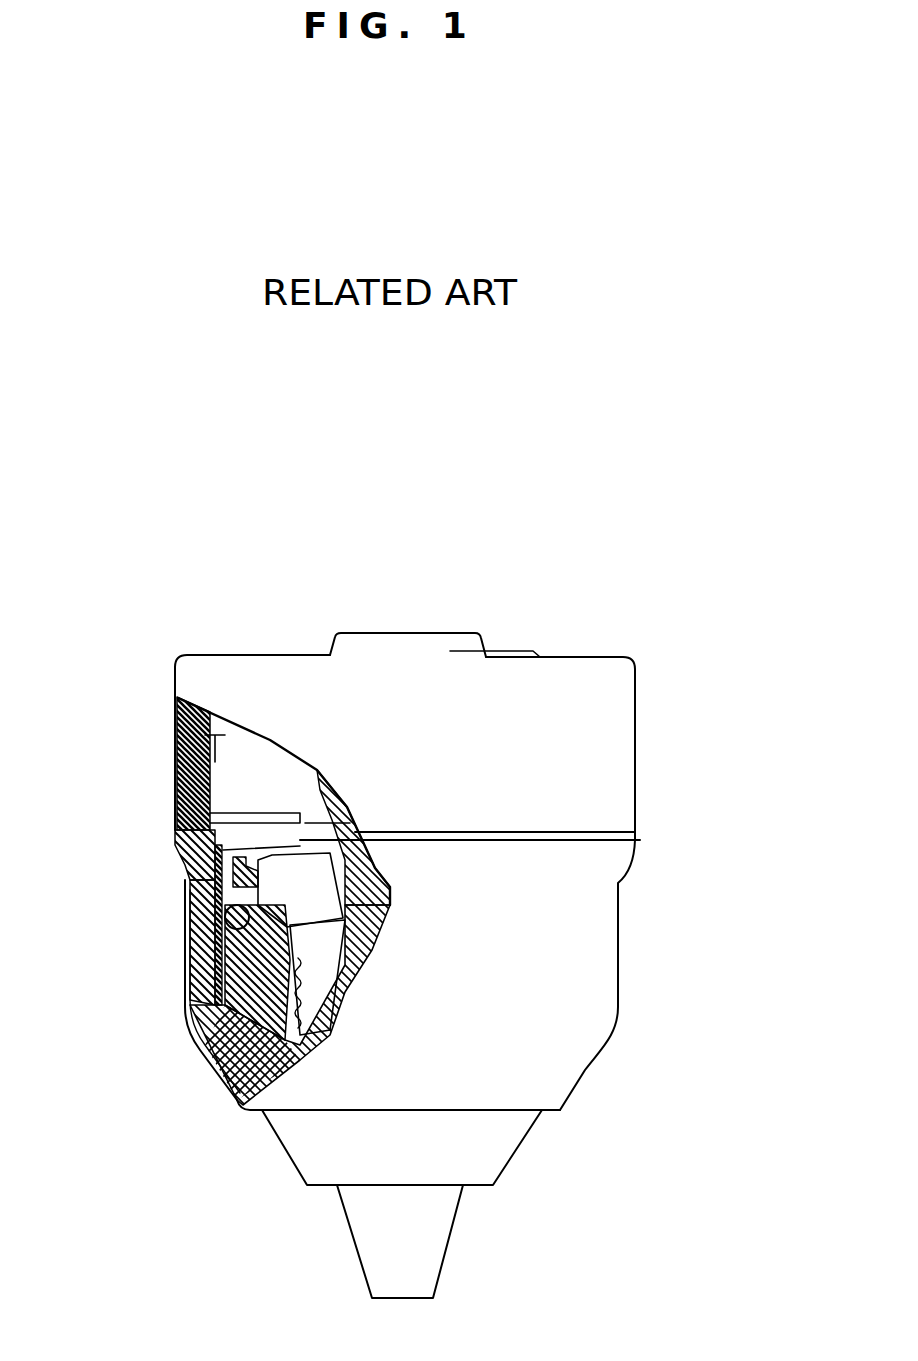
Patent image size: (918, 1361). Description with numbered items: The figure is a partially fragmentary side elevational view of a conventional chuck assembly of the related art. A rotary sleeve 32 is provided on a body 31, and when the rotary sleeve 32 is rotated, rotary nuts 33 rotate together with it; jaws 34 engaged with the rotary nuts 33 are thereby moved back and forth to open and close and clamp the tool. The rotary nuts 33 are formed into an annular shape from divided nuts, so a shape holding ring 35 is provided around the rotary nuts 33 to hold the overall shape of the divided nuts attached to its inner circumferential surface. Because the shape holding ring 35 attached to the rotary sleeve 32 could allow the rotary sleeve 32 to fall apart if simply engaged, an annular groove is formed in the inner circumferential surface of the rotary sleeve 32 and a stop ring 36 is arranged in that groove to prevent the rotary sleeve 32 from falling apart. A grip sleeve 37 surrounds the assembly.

The body 31 is at (452, 635).
The rotary sleeve 32 is at (187, 910).
The rotary nuts 33 is at (188, 968).
The jaws 34 is at (243, 1040).
The shape holding ring 35 is at (177, 848).
The stop ring 36 is at (178, 797).
The grip sleeve 37 is at (637, 745).